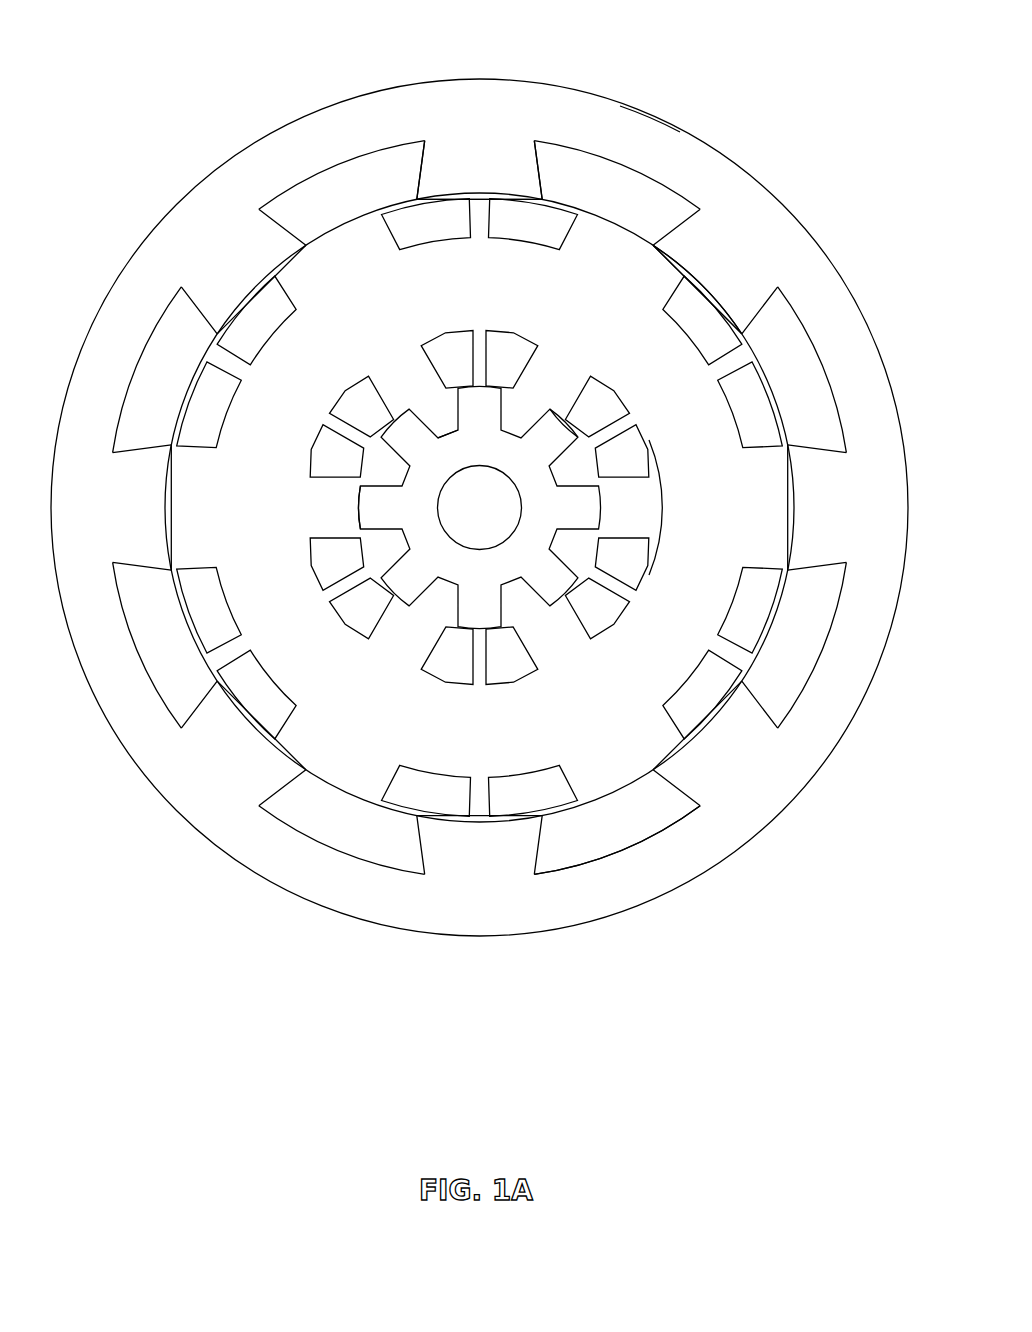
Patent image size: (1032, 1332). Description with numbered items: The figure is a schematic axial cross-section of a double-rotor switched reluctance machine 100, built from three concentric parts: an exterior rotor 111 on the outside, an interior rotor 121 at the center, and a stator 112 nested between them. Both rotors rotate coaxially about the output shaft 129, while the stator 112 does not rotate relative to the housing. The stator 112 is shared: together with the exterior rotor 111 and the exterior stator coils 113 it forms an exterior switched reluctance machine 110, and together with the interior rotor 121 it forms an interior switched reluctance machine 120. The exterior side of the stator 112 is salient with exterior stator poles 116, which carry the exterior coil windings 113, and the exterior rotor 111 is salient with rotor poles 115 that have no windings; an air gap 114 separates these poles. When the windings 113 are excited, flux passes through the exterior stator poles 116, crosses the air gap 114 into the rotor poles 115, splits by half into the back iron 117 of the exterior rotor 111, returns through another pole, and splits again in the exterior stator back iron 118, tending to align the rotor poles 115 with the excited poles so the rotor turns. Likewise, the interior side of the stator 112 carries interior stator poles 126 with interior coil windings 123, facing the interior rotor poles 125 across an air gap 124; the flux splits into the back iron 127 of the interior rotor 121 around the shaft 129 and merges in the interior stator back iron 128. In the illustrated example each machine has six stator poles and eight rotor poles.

The double-rotor switched reluctance machine 100 is at (750, 43).
The exterior switched reluctance machine 110 is at (746, 775).
The exterior rotor 111 is at (858, 332).
The stator 112 is at (266, 493).
The exterior stator coils 113 is at (524, 236).
The air gap 114 is at (684, 246).
The rotor poles 115 is at (534, 166).
The exterior stator poles 116 is at (613, 262).
The back iron 117 is at (644, 114).
The exterior stator back iron 118 is at (362, 745).
The interior switched reluctance machine 120 is at (672, 517).
The interior rotor 121 is at (528, 523).
The interior coil windings 123 is at (452, 342).
The air gap 124 is at (550, 395).
The rotor poles 125 is at (407, 421).
The interior stator poles 126 is at (397, 371).
The back iron 127 is at (424, 488).
The interior stator back iron 128 is at (380, 647).
The output shaft 129 is at (472, 482).